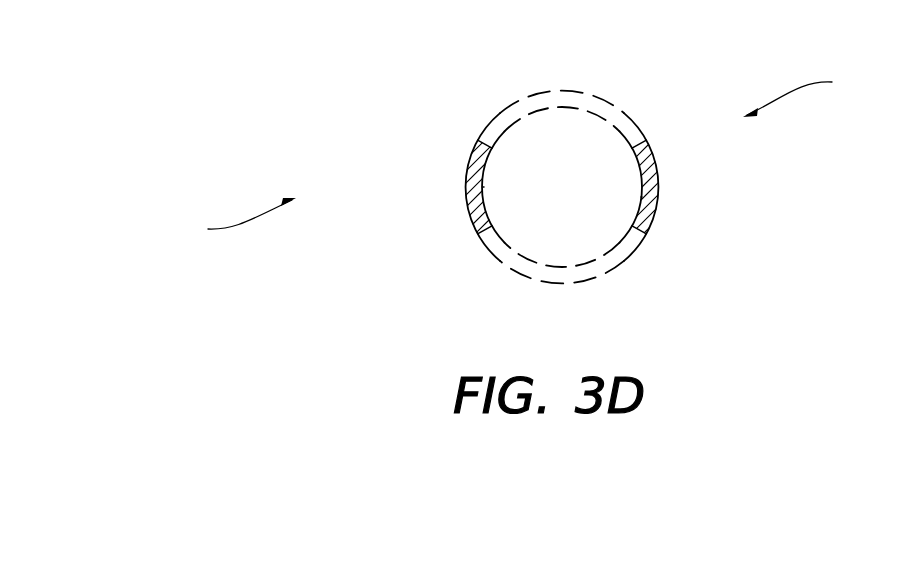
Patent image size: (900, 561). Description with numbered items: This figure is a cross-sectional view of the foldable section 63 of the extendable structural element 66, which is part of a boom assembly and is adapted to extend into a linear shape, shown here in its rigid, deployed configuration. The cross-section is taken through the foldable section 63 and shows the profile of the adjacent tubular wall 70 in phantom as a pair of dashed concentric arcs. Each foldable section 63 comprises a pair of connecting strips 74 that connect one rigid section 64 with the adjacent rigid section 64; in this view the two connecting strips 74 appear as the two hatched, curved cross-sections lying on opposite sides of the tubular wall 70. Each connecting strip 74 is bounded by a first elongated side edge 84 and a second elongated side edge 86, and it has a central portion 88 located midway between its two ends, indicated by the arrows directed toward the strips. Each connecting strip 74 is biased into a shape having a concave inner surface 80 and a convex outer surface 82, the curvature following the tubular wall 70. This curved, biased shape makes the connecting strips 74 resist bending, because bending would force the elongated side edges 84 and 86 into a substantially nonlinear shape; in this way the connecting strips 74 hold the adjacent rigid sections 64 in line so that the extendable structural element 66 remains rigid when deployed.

The foldable section 63 is at (467, 190).
The rigid section 64 is at (523, 100).
The extendable structural element 66 is at (452, 76).
The tubular wall 70 is at (582, 92).
The connecting strip 74 is at (465, 168).
The concave inner surface 80 is at (483, 187).
The convex outer surface 82 is at (467, 182).
The first elongated side edge 84 is at (480, 140).
The second elongated side edge 86 is at (483, 243).
The central portion 88 is at (518, 155).